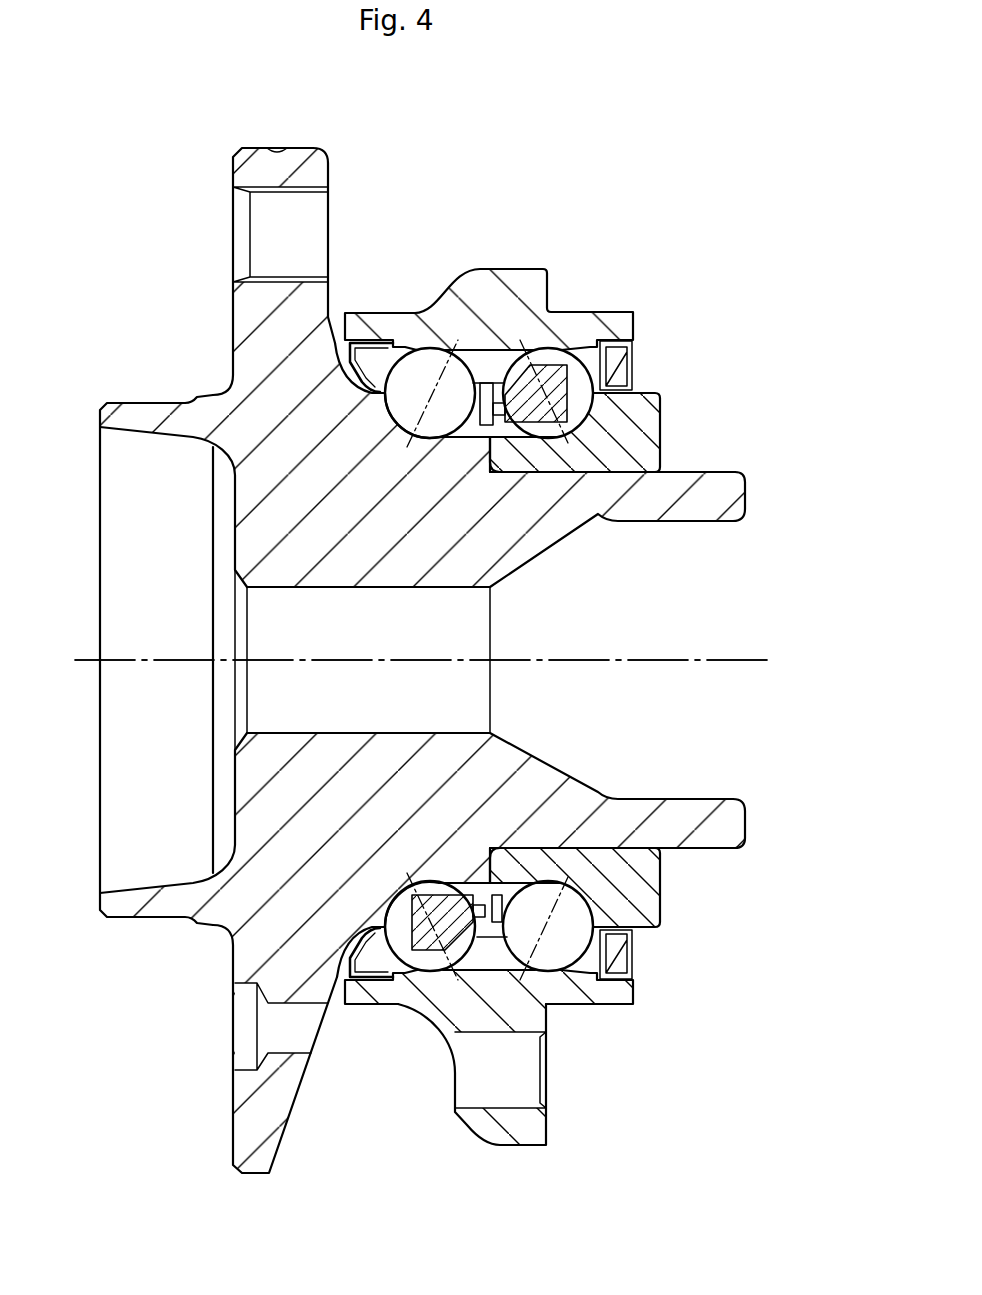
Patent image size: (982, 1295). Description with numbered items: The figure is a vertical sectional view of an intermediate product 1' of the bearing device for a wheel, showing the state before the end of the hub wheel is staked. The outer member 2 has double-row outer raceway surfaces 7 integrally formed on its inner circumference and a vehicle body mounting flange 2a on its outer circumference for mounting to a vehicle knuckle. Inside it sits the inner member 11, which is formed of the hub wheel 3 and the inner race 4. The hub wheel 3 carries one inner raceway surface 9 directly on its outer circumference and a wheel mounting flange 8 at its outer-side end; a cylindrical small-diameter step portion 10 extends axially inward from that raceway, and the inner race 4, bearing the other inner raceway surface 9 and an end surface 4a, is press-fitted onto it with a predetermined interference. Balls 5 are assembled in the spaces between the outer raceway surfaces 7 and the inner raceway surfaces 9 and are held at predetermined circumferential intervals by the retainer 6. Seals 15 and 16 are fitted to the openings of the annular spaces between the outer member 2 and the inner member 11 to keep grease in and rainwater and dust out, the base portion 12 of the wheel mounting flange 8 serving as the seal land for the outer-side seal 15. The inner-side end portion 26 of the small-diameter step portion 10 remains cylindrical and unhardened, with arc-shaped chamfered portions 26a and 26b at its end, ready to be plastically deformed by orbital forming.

The intermediate product 1' is at (422, 408).
The outer member 2 is at (518, 266).
The vehicle body mounting flange 2a is at (540, 1132).
The hub wheel 3 is at (135, 400).
The inner race 4 is at (650, 385).
The end surface of the inner race 4a is at (662, 888).
The balls 5 is at (428, 963).
The retainer 6 is at (498, 888).
The outer raceway surfaces 7 is at (418, 350).
The wheel mounting flange 8 is at (285, 162).
The inner raceway surfaces 9 is at (428, 440).
The small-diameter step portion 10 is at (612, 805).
The inner member 11 is at (180, 453).
The base portion of the wheel mounting flange 12 is at (340, 343).
The seal 15 is at (355, 985).
The seal 16 is at (635, 978).
The inner-side end portion 26 is at (718, 482).
The chamfered portion 26a is at (748, 848).
The chamfered portion 26b is at (748, 797).